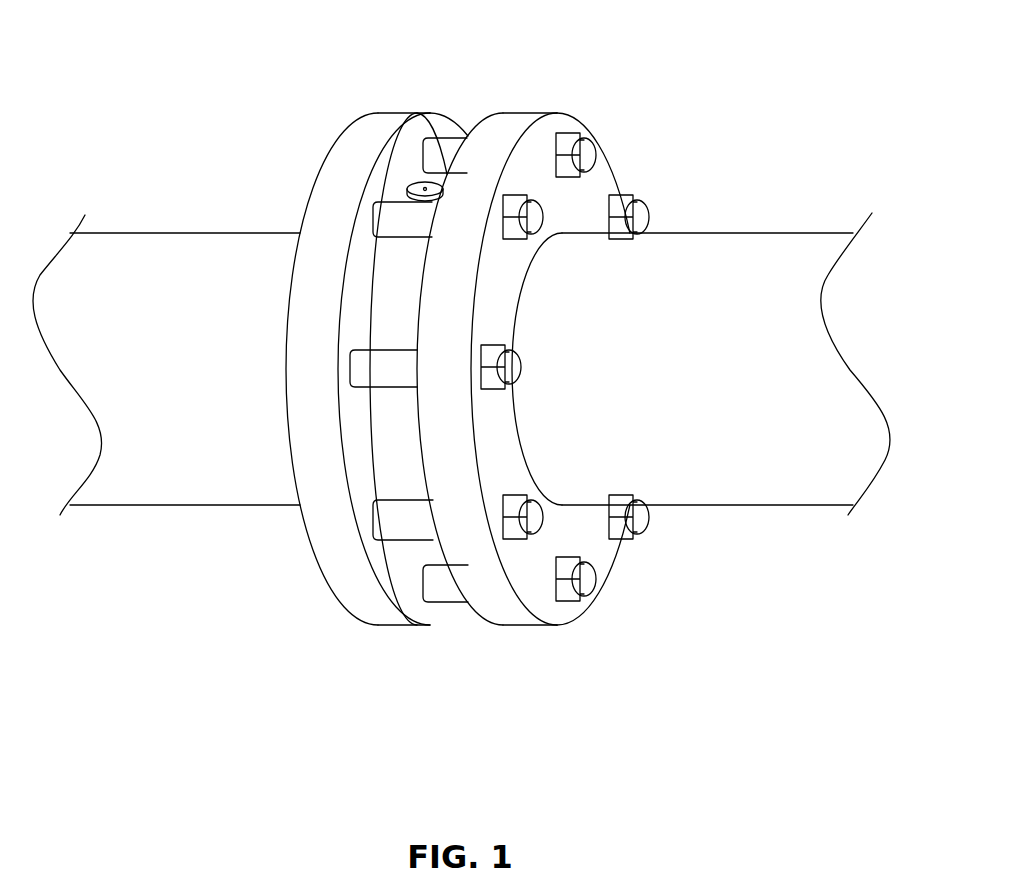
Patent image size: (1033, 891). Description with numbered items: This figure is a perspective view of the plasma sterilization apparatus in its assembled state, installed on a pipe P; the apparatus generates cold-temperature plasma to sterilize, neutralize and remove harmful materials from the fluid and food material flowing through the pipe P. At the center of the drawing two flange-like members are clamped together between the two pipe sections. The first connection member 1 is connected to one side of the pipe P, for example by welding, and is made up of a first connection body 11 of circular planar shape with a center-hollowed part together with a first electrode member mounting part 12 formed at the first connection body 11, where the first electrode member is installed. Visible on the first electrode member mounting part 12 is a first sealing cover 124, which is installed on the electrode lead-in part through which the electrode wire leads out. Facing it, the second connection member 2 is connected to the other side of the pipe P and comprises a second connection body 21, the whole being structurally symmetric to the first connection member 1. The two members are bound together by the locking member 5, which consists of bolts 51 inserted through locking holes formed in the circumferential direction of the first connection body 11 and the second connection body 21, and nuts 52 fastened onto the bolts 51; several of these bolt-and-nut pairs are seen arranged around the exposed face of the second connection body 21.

The first connection member 1 is at (342, 371).
The second connection member 2 is at (523, 371).
The locking member 5 is at (621, 334).
The first connection body 11 is at (358, 598).
The first electrode member mounting part 12 is at (408, 480).
The second connection body 21 is at (504, 598).
The bolt 51 is at (597, 150).
The nut 52 is at (575, 140).
The first sealing cover 124 is at (414, 184).
The pipe P is at (154, 500).